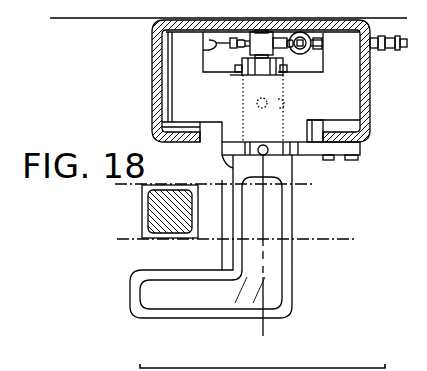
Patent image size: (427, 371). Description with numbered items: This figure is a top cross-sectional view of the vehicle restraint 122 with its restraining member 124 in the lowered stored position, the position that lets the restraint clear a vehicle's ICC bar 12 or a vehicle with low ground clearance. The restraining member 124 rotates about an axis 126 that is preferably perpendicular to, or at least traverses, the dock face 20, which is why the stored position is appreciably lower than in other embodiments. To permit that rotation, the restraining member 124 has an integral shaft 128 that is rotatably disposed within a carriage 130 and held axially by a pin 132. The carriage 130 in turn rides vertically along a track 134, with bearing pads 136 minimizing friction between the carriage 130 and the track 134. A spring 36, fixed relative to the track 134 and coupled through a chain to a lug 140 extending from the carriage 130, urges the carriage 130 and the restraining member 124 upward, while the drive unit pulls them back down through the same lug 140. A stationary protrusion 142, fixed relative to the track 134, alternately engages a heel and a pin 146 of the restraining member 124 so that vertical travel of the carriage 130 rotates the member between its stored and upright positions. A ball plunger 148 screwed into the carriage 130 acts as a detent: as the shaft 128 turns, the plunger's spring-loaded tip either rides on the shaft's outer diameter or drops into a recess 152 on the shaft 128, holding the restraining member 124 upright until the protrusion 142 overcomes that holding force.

The ICC bar 12 is at (134, 245).
The dock face 20 is at (97, 22).
The spring 36 is at (306, 72).
The vehicle restraint 122 is at (380, 228).
The restraining member 124 is at (292, 289).
The axis 126 is at (264, 220).
The integral shaft 128 is at (243, 80).
The carriage 130 is at (348, 115).
The pin 132 is at (236, 70).
The track 134 is at (168, 123).
The bearing pads 136 is at (158, 88).
The lug 140 is at (205, 52).
The protrusion 142 is at (310, 158).
The pin 146 is at (257, 153).
The ball plunger 148 is at (260, 98).
The recess 152 is at (288, 98).